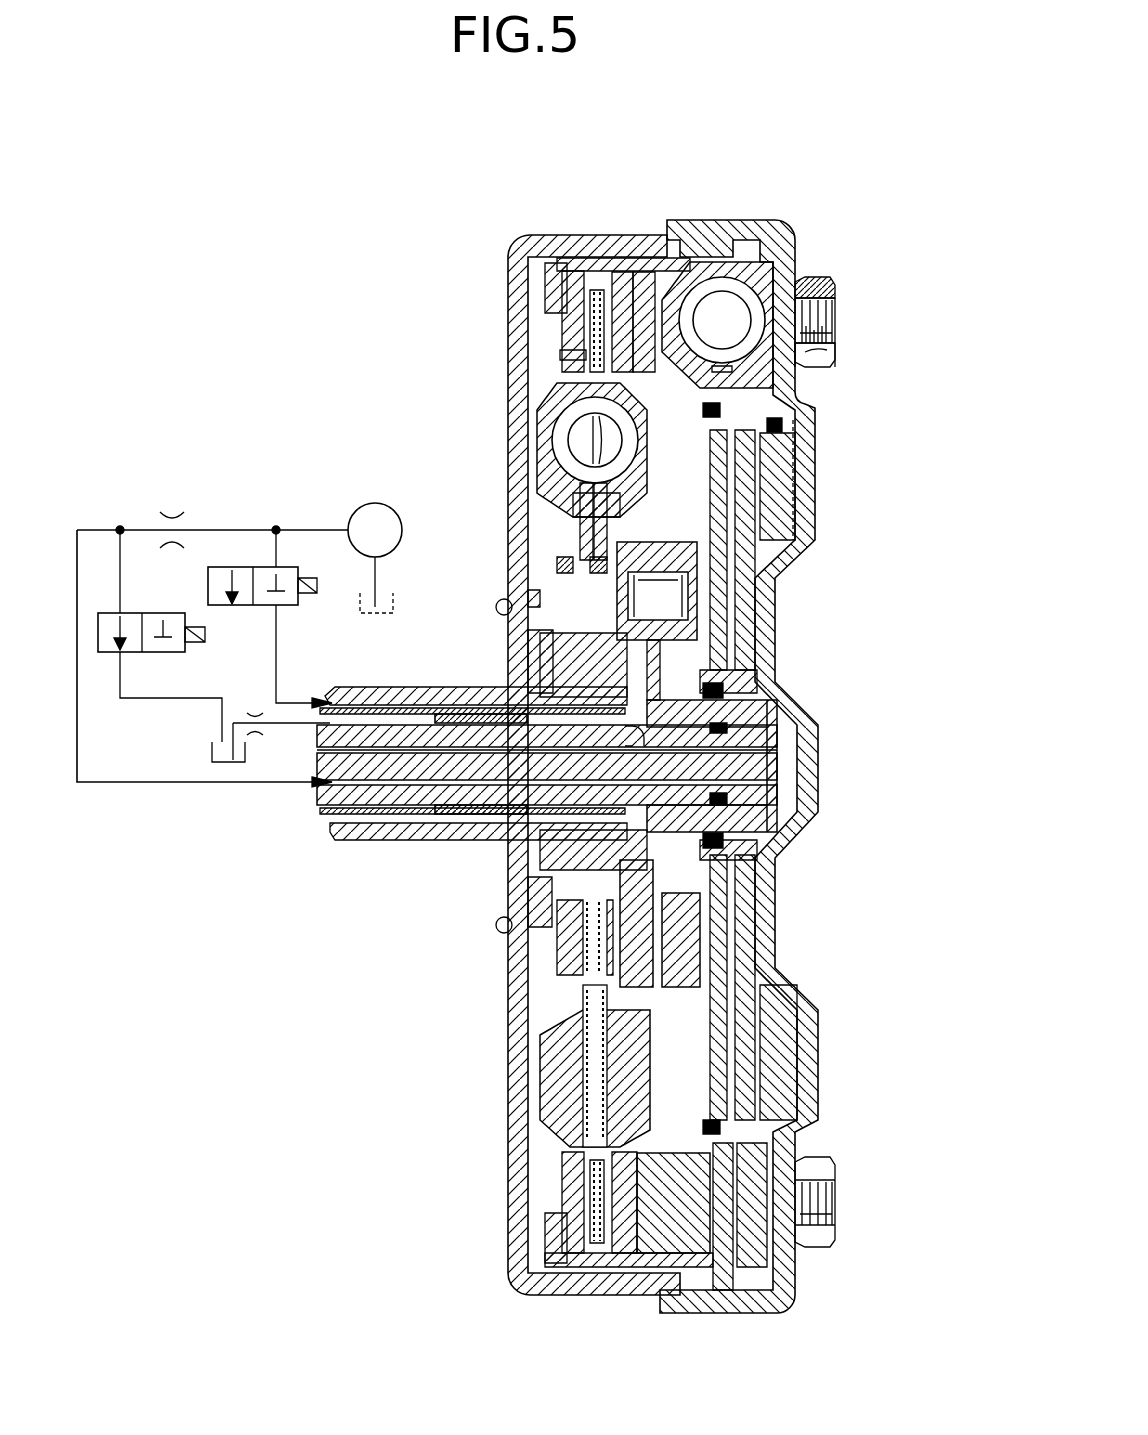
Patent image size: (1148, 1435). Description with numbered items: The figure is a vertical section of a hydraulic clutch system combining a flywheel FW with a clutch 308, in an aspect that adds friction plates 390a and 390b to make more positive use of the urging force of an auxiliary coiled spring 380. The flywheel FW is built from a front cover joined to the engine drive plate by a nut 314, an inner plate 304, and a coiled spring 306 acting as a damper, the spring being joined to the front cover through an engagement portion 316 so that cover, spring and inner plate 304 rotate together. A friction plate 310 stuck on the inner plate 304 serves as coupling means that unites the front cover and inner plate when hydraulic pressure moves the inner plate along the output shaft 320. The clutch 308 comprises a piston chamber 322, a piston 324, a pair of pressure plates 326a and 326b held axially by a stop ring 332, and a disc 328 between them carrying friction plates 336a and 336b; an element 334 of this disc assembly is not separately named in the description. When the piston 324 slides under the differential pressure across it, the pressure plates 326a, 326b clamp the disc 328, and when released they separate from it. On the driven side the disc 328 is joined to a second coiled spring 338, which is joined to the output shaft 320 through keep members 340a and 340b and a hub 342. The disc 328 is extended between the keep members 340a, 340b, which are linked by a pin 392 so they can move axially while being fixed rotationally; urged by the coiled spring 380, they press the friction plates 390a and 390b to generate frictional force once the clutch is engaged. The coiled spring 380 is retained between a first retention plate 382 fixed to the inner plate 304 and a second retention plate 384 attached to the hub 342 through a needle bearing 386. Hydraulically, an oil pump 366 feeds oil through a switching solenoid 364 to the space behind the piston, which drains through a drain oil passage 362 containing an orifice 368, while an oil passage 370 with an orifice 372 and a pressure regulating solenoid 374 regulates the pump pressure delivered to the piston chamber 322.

The clutch 308 is at (590, 222).
The flywheel FW is at (812, 220).
The coiled spring 306 is at (822, 300).
The nut 314 is at (825, 358).
The engagement portion 316 is at (748, 252).
The friction plate 310 is at (798, 424).
The inner plate 304 is at (790, 470).
The pressure plate 326a is at (640, 265).
The pressure plate 326b is at (572, 272).
The stop ring 332 is at (553, 290).
The disc 328 is at (563, 312).
The friction disc 334 is at (600, 292).
The friction plate 336a is at (640, 375).
The friction plate 336b is at (612, 340).
The keep member 340b is at (560, 400).
The second coiled spring 338 is at (560, 445).
The keep member 340a is at (640, 498).
The friction plate 390a is at (582, 510).
The friction plate 390b is at (597, 540).
The pin 392 is at (560, 565).
The coiled spring 380 is at (690, 578).
The hub 342 is at (540, 630).
The piston 324 is at (727, 672).
The piston chamber 322 is at (745, 622).
The first retention plate 382 is at (745, 672).
The needle bearing 386 is at (720, 730).
The drain oil passage 362 is at (410, 687).
The second retention plate 384 is at (620, 740).
The output shaft 320 is at (445, 806).
The oil passage 370 is at (155, 785).
The orifice 372 is at (172, 508).
The oil pump 366 is at (375, 503).
The pressure regulating solenoid 374 is at (150, 610).
The switching solenoid 364 is at (237, 607).
The orifice 368 is at (258, 740).